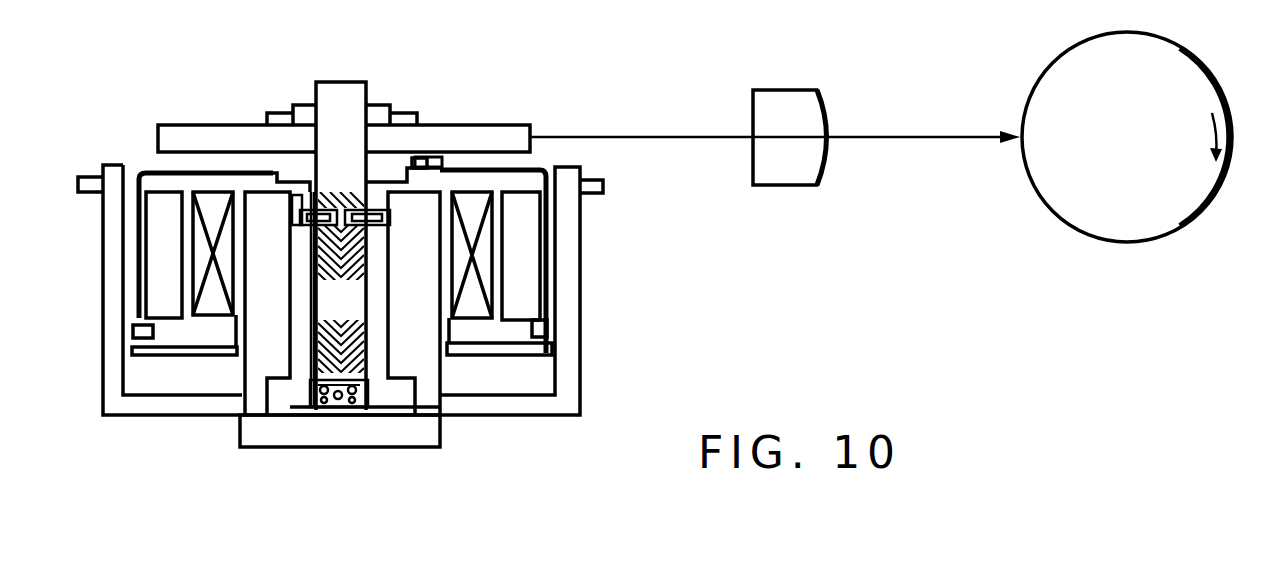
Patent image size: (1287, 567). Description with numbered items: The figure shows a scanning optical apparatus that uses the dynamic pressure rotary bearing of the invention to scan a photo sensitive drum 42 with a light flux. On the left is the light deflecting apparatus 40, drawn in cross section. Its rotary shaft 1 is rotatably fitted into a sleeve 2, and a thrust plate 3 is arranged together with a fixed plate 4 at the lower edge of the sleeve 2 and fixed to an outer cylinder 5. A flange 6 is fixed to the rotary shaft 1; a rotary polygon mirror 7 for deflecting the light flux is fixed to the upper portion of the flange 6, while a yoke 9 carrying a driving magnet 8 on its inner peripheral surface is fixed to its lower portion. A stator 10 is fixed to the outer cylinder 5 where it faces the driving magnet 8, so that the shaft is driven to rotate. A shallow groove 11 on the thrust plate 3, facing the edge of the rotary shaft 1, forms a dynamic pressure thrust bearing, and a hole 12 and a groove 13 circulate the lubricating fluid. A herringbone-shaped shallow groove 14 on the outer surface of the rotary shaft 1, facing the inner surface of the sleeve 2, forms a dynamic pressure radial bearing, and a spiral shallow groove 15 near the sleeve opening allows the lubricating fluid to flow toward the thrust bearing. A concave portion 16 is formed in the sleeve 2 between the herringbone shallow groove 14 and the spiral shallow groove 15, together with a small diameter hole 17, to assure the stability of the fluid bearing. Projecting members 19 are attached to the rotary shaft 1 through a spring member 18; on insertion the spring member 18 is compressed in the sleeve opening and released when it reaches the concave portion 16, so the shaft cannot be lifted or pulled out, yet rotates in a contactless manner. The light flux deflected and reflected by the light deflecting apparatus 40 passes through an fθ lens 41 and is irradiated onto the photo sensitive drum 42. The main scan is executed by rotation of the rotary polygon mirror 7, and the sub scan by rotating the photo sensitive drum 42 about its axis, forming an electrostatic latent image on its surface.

The rotary shaft 1 is at (358, 93).
The sleeve 2 is at (393, 397).
The thrust plate 3 is at (363, 397).
The fixed plate 4 is at (265, 430).
The outer cylinder 5 is at (192, 403).
The flange 6 is at (425, 162).
The rotary polygon mirror 7 is at (503, 133).
The driving magnet 8 is at (160, 226).
The yoke 9 is at (143, 170).
The stator 10 is at (468, 303).
The shallow groove 11 is at (318, 405).
The hole 12 is at (337, 400).
The groove 13 is at (347, 405).
The herringbone-shaped shallow groove 14 is at (170, 176).
The spiral shallow groove 15 is at (326, 208).
The concave portion 16 is at (313, 208).
The small diameter hole 17 is at (297, 212).
The spring member 18 is at (348, 195).
The projecting member 19 is at (378, 188).
The light deflecting apparatus 40 is at (520, 70).
The fθ lens 41 is at (830, 118).
The photo sensitive drum 42 is at (1212, 72).